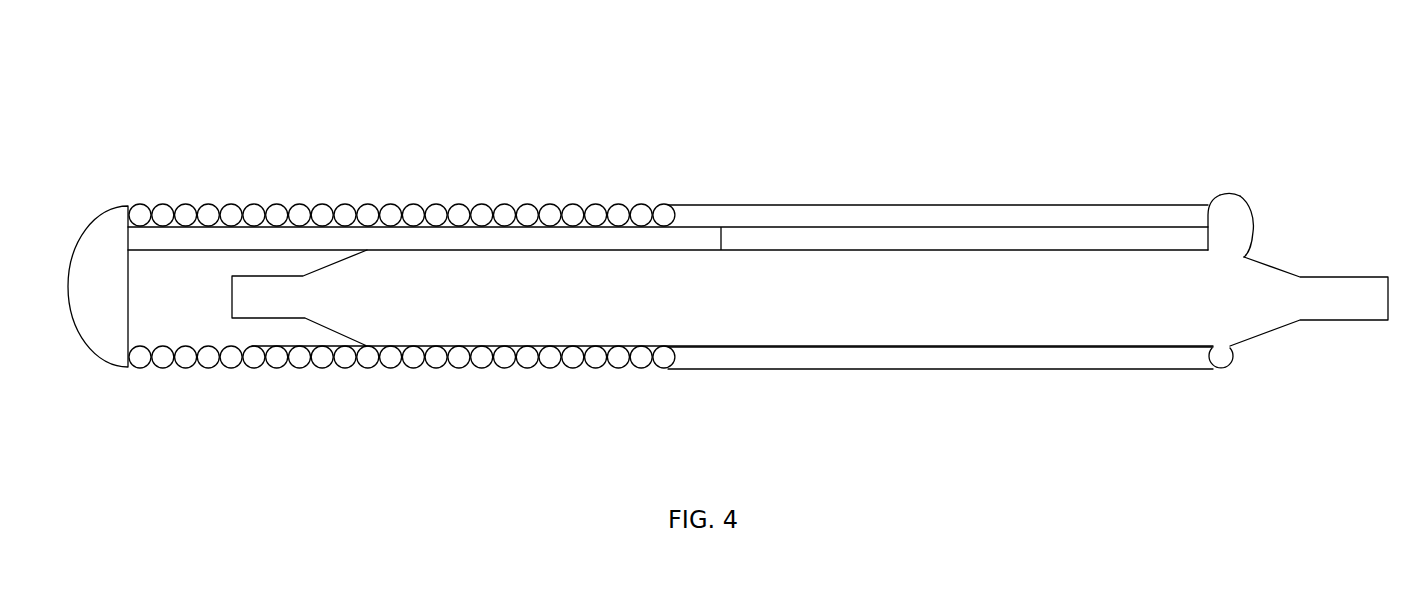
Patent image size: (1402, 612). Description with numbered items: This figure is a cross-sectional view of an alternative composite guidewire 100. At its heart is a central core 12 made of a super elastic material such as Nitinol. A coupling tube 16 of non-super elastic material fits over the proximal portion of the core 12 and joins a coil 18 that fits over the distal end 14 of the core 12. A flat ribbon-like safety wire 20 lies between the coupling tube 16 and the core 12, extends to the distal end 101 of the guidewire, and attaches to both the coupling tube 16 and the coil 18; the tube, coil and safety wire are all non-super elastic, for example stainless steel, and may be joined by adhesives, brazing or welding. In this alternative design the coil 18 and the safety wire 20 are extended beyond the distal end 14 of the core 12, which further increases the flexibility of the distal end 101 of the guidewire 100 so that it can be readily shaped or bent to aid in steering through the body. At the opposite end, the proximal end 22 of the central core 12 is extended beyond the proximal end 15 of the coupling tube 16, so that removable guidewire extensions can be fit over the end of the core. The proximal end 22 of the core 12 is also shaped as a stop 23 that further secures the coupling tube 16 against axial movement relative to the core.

The composite guidewire 100 is at (990, 123).
The distal end of the guidewire 101 is at (235, 397).
The coil 18 is at (194, 205).
The safety wire 20 is at (380, 232).
The coupling tube 16 is at (1015, 212).
The proximal end of the coupling tube 15 is at (1212, 203).
The stop 23 is at (1228, 193).
The proximal end of the central core 22 is at (1331, 331).
The central core 12 is at (791, 307).
The distal end of the core 14 is at (387, 330).